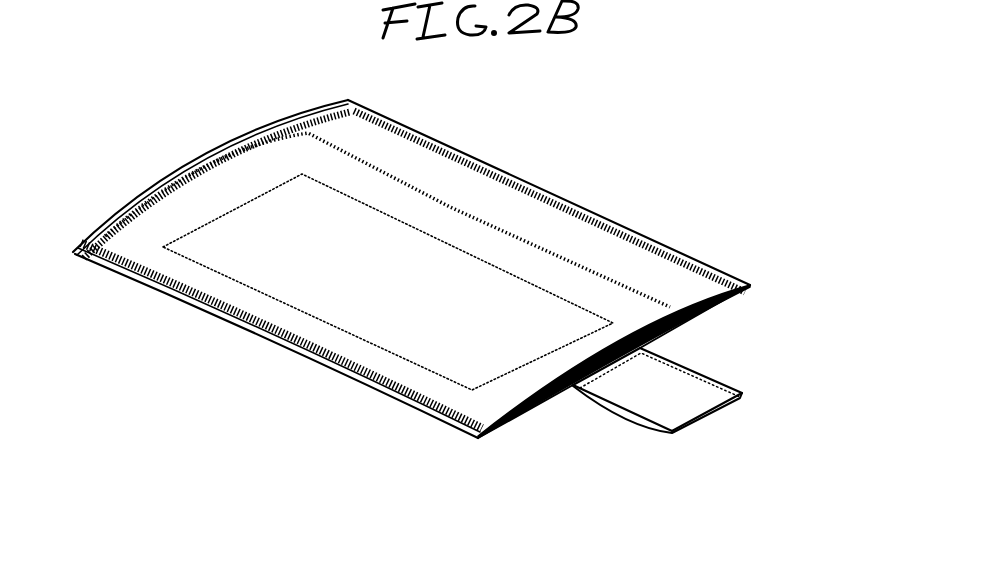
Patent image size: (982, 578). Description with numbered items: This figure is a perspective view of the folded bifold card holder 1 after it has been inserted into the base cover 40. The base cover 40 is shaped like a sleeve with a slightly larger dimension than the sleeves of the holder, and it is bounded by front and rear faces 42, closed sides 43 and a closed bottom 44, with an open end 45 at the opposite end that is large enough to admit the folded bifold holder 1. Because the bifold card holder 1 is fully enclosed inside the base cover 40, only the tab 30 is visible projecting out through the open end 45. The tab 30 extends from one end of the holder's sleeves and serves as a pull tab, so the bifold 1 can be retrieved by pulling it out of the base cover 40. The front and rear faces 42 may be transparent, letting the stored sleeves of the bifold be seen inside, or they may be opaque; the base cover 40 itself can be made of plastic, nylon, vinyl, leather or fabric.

The bifold card holder 1 is at (777, 358).
The base cover 40 is at (695, 140).
The closed bottom 44 is at (195, 162).
The closed sides 43 is at (318, 368).
The open end 45 is at (500, 490).
The front and rear faces 42 is at (303, 297).
The tab 30 is at (743, 432).